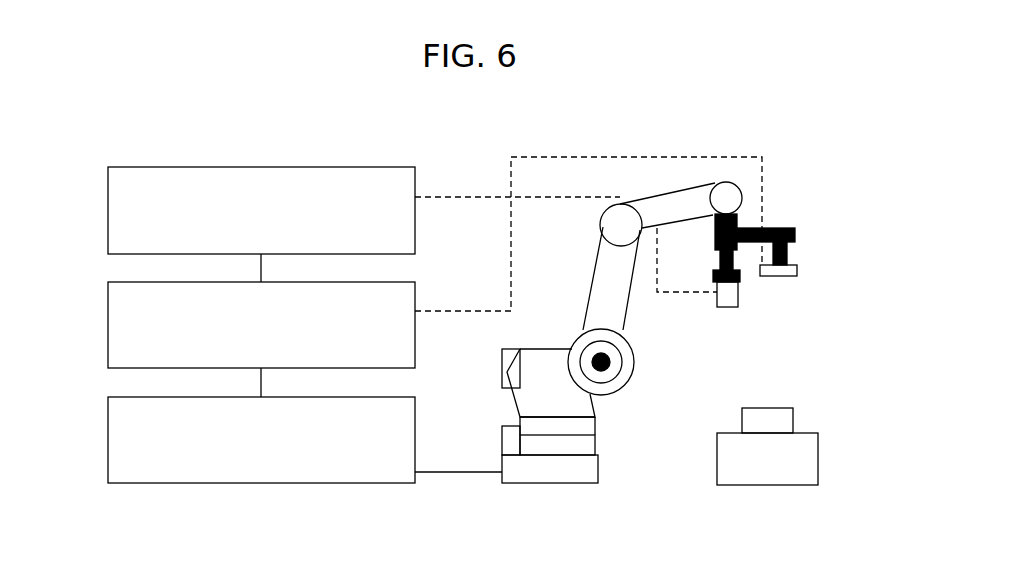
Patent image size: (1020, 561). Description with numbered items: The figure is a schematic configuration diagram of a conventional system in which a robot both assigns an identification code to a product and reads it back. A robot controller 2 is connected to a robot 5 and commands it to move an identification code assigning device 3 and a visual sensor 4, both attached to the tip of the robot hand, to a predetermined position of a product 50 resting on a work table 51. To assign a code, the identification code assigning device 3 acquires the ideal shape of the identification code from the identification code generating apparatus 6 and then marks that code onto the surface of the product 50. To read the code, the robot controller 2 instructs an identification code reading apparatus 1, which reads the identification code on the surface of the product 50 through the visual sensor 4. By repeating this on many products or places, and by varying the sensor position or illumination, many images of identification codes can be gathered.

The identification code generating apparatus 6 is at (106, 213).
The identification code reading apparatus 1 is at (106, 337).
The robot controller 2 is at (106, 448).
The robot 5 is at (595, 268).
The identification code assigning device 3 is at (717, 308).
The visual sensor 4 is at (795, 268).
The product 50 is at (790, 405).
The work table 51 is at (818, 460).